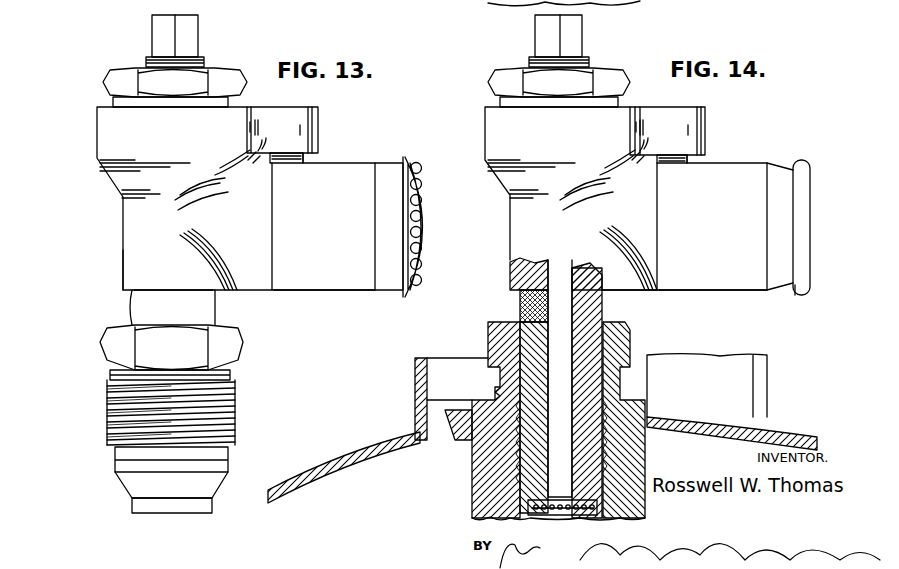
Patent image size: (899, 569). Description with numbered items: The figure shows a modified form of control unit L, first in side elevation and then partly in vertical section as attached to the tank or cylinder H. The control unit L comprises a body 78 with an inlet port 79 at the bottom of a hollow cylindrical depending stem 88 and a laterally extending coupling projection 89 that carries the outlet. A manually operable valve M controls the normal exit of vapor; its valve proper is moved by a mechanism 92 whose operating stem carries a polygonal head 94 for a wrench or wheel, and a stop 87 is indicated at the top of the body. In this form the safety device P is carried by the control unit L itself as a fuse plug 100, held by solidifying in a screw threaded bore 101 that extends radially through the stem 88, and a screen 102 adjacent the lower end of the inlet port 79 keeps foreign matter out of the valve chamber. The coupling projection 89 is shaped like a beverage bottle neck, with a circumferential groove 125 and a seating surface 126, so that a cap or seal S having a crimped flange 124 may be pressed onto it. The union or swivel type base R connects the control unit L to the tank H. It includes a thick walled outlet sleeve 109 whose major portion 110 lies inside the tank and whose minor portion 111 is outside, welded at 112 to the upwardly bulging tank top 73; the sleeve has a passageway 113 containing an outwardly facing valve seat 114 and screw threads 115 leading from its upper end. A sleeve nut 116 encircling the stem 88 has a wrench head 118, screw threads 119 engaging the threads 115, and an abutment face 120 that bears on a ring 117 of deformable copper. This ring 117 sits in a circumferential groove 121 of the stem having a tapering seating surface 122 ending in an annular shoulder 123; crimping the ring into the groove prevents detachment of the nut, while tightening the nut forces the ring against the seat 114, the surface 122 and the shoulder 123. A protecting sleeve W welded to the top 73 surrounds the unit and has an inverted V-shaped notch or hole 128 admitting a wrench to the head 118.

In FIG. 14, the top 73 is at (810, 433).
In FIG. 13, the body 78 is at (125, 292).
In FIG. 14, the body 78 is at (510, 288).
In FIG. 14, the inlet port 79 is at (582, 2).
In FIG. 14, the stop 87 is at (540, 3).
In FIG. 14, the stem 88 is at (597, 318).
In FIG. 13, the coupling projection 89 is at (313, 293).
In FIG. 14, the coupling projection 89 is at (723, 290).
In FIG. 13, the mechanism 92 is at (200, 80).
In FIG. 14, the mechanism 92 is at (533, 72).
In FIG. 13, the polygonal head 94 is at (200, 22).
In FIG. 14, the polygonal head 94 is at (580, 42).
In FIG. 13, the fuse plug 100 is at (134, 310).
In FIG. 14, the fuse plug 100 is at (520, 308).
In FIG. 14, the screw threaded bore 101 is at (515, 318).
In FIG. 14, the screen 102 is at (527, 520).
In FIG. 14, the outlet sleeve 109 is at (473, 450).
In FIG. 14, the major portion 110 is at (473, 503).
In FIG. 14, the minor portion 111 is at (630, 383).
In FIG. 14, the weld 112 is at (648, 402).
In FIG. 14, the passageway 113 is at (533, 10).
In FIG. 14, the valve seat 114 is at (647, 465).
In FIG. 14, the screw threads 115 is at (645, 393).
In FIG. 13, the sleeve nut 116 is at (115, 377).
In FIG. 14, the sleeve nut 116 is at (500, 363).
In FIG. 13, the ring 117 is at (213, 477).
In FIG. 14, the ring 117 is at (473, 513).
In FIG. 13, the wrench head 118 is at (243, 340).
In FIG. 13, the screw threads 119 is at (233, 410).
In FIG. 14, the screw threads 119 is at (500, 377).
In FIG. 13, the abutment face 120 is at (138, 463).
In FIG. 14, the circumferential groove 121 is at (477, 470).
In FIG. 14, the seating surface 122 is at (473, 487).
In FIG. 13, the annular shoulder 123 is at (182, 492).
In FIG. 13, the crimped flange 124 is at (405, 158).
In FIG. 14, the circumferential groove 125 is at (783, 287).
In FIG. 14, the seating surface 126 is at (812, 240).
In FIG. 14, the notch or hole 128 is at (767, 380).
In FIG. 13, the manually operable valve M is at (232, 100).
In FIG. 14, the manually operable valve M is at (620, 102).
In FIG. 13, the cap or seal S is at (428, 220).
In FIG. 13, the safety device P is at (131, 309).
In FIG. 14, the safety device P is at (520, 300).
In FIG. 13, the control unit L is at (217, 283).
In FIG. 14, the control unit L is at (600, 293).
In FIG. 13, the union or swivel type base R is at (227, 377).
In FIG. 14, the union or swivel type base R is at (647, 448).
In FIG. 14, the protecting sleeve W is at (414, 393).
In FIG. 14, the tank or cylinder H is at (313, 477).